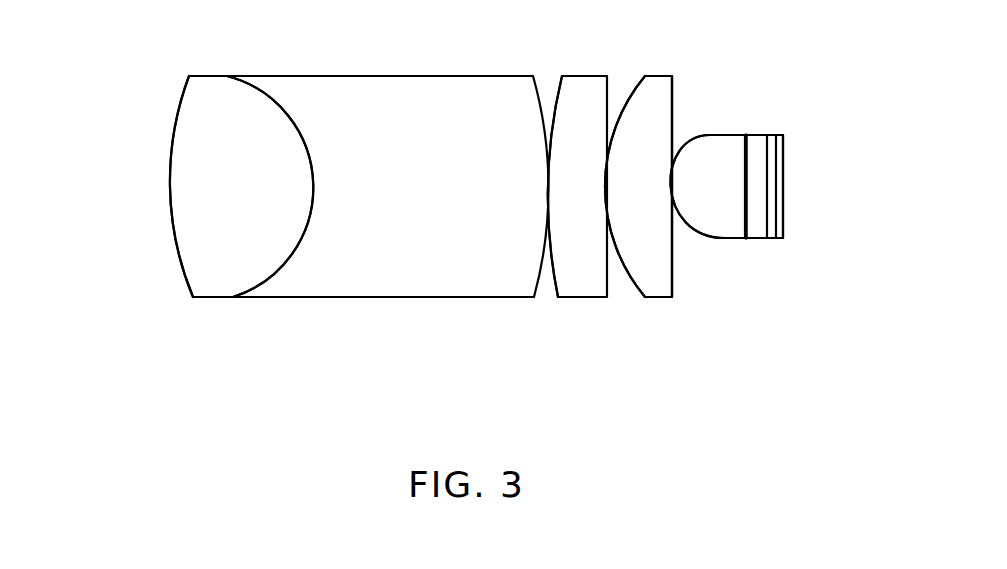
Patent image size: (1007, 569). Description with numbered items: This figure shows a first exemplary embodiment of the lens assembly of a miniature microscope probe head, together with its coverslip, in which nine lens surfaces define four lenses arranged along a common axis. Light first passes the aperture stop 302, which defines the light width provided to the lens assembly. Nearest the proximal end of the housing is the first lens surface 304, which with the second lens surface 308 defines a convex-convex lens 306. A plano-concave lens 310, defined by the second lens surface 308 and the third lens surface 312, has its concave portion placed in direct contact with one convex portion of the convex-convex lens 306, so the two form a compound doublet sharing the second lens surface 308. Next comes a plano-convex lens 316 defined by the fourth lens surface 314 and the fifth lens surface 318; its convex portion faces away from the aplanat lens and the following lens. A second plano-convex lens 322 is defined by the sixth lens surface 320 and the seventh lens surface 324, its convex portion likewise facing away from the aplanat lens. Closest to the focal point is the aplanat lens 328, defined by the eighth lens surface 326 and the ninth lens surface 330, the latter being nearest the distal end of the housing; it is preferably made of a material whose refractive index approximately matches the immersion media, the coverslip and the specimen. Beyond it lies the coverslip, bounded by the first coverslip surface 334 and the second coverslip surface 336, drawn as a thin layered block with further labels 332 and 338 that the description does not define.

The aperture stop 302 is at (70, 271).
The first lens surface 304 is at (175, 253).
The convex-convex lens 306 is at (203, 248).
The second lens surface 308 is at (285, 263).
The plano-concave lens 310 is at (390, 260).
The third lens surface 312 is at (537, 285).
The fourth lens surface 314 is at (580, 277).
The plano-convex lens 316 is at (557, 283).
The fifth lens surface 318 is at (613, 287).
The sixth lens surface 320 is at (632, 280).
The plano-convex lens 322 is at (663, 285).
The seventh lens surface 324 is at (670, 275).
The eighth lens surface 326 is at (692, 230).
The aplanat lens 328 is at (725, 223).
The ninth lens surface 330 is at (760, 235).
The cover layer 332 is at (752, 190).
The first coverslip surface 334 is at (765, 165).
The second coverslip surface 336 is at (770, 167).
The substrate 338 is at (780, 212).